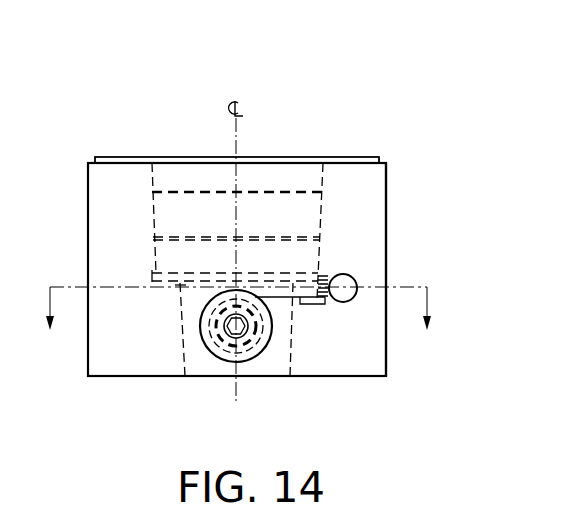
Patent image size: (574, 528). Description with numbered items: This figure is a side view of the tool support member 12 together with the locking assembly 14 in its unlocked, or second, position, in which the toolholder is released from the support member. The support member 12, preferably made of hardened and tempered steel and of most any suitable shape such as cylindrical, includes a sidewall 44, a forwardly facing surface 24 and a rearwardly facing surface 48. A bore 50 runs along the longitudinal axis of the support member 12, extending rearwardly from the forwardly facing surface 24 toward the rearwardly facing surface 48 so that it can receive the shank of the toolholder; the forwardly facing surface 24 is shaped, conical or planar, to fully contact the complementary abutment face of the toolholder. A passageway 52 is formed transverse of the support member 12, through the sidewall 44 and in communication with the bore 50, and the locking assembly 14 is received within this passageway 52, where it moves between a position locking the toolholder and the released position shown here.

The tool support member 12 is at (82, 85).
The locking assembly 14 is at (338, 398).
The forwardly facing surface 24 is at (356, 157).
The sidewall 44 is at (391, 212).
The rearwardly facing surface 48 is at (125, 383).
The bore 50 is at (287, 157).
The passageway 52 is at (228, 362).